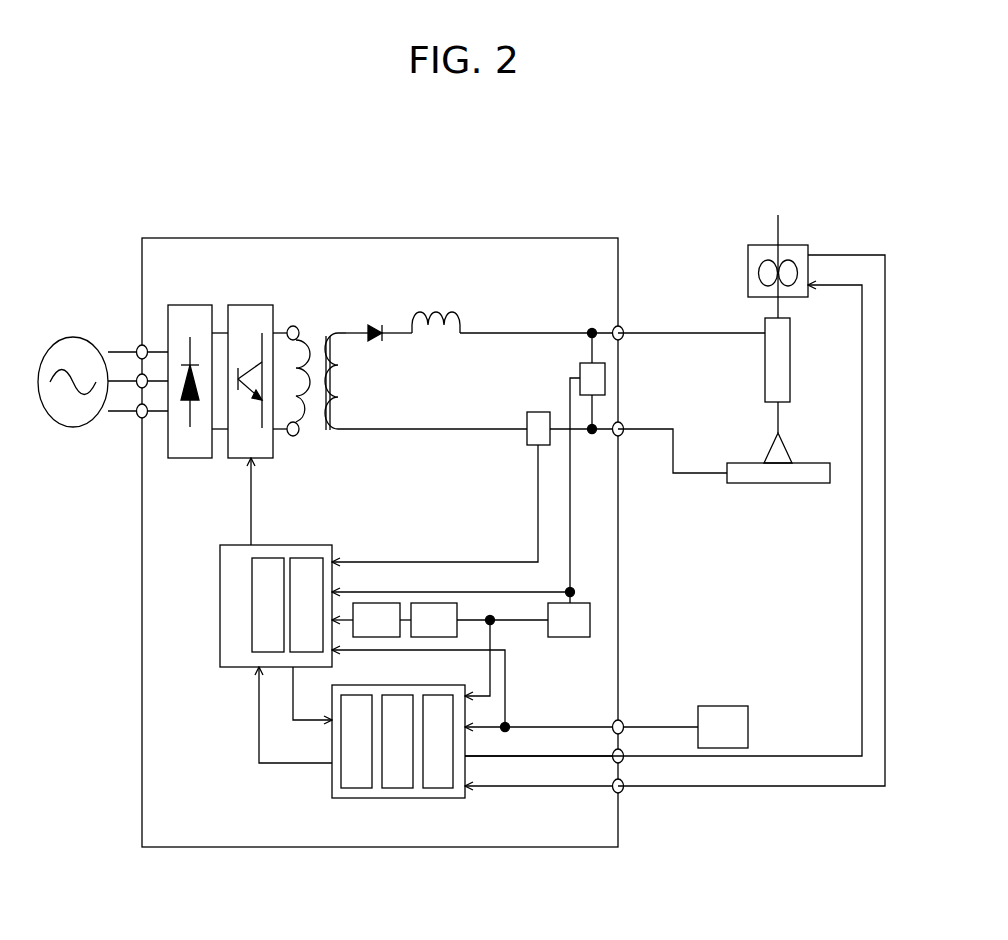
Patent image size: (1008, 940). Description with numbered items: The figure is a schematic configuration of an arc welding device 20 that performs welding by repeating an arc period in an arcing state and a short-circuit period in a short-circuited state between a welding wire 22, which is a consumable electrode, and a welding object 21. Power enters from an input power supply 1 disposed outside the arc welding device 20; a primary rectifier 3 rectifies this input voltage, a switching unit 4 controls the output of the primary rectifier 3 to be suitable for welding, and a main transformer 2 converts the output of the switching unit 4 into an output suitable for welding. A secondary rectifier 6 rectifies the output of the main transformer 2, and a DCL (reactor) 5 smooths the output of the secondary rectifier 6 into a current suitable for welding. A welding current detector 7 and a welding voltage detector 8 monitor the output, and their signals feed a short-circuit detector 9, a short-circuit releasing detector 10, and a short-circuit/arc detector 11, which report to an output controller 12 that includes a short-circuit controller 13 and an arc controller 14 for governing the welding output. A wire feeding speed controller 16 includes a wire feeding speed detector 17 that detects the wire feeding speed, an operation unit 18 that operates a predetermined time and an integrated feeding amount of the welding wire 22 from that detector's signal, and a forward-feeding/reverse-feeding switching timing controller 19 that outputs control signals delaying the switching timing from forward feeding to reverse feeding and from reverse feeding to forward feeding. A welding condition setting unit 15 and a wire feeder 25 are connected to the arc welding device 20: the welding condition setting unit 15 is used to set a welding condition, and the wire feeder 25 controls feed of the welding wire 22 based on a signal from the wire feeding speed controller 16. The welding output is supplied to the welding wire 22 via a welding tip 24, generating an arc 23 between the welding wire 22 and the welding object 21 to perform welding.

The input power supply 1 is at (85, 337).
The main transformer 2 is at (328, 333).
The primary rectifier 3 is at (188, 303).
The switching unit 4 is at (250, 303).
The DCL (reactor) 5 is at (435, 307).
The secondary rectifier 6 is at (378, 325).
The welding current detector 7 is at (538, 410).
The welding voltage detector 8 is at (585, 362).
The short-circuit detector 9 is at (578, 600).
The short-circuit releasing detector 10 is at (435, 602).
The short-circuit/arc detector 11 is at (377, 602).
The output controller 12 is at (233, 543).
The short-circuit controller 13 is at (269, 557).
The arc controller 14 is at (307, 557).
The welding condition setting unit 15 is at (722, 705).
The wire feeding speed controller 16 is at (330, 773).
The wire feeding speed detector 17 is at (357, 790).
The operation unit 18 is at (397, 790).
The forward-feeding/reverse-feeding switching timing controller 19 is at (437, 790).
The arc welding device 20 is at (182, 848).
The welding object 21 is at (777, 483).
The welding wire 22 is at (777, 227).
The arc 23 is at (790, 448).
The welding tip 24 is at (793, 348).
The wire feeder 25 is at (760, 270).